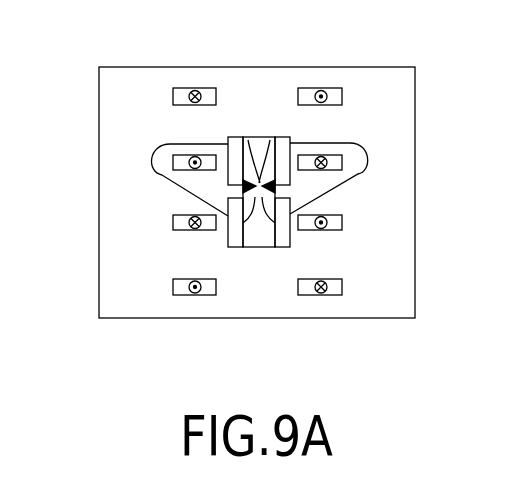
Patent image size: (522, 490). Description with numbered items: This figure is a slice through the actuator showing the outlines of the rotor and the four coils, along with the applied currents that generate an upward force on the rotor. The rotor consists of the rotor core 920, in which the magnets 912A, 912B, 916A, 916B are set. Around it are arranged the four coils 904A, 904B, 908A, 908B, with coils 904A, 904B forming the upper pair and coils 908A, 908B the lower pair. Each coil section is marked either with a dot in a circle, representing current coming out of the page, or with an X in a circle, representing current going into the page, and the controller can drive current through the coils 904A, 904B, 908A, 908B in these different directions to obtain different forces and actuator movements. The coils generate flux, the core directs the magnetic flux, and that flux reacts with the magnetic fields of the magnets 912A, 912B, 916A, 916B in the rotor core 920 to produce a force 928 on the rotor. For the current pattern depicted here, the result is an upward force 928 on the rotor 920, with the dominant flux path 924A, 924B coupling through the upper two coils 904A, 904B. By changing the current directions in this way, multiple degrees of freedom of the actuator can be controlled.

The coil 904A is at (179, 163).
The coil 904B is at (333, 163).
The coil 908A is at (180, 287).
The coil 908B is at (342, 285).
The magnet 912A is at (236, 152).
The magnet 912B is at (283, 152).
The magnet 916A is at (237, 234).
The magnet 916B is at (285, 237).
The rotor core 920 is at (258, 236).
The force 928 is at (258, 180).
The dominant flux path 924A is at (153, 162).
The dominant flux path 924B is at (366, 166).